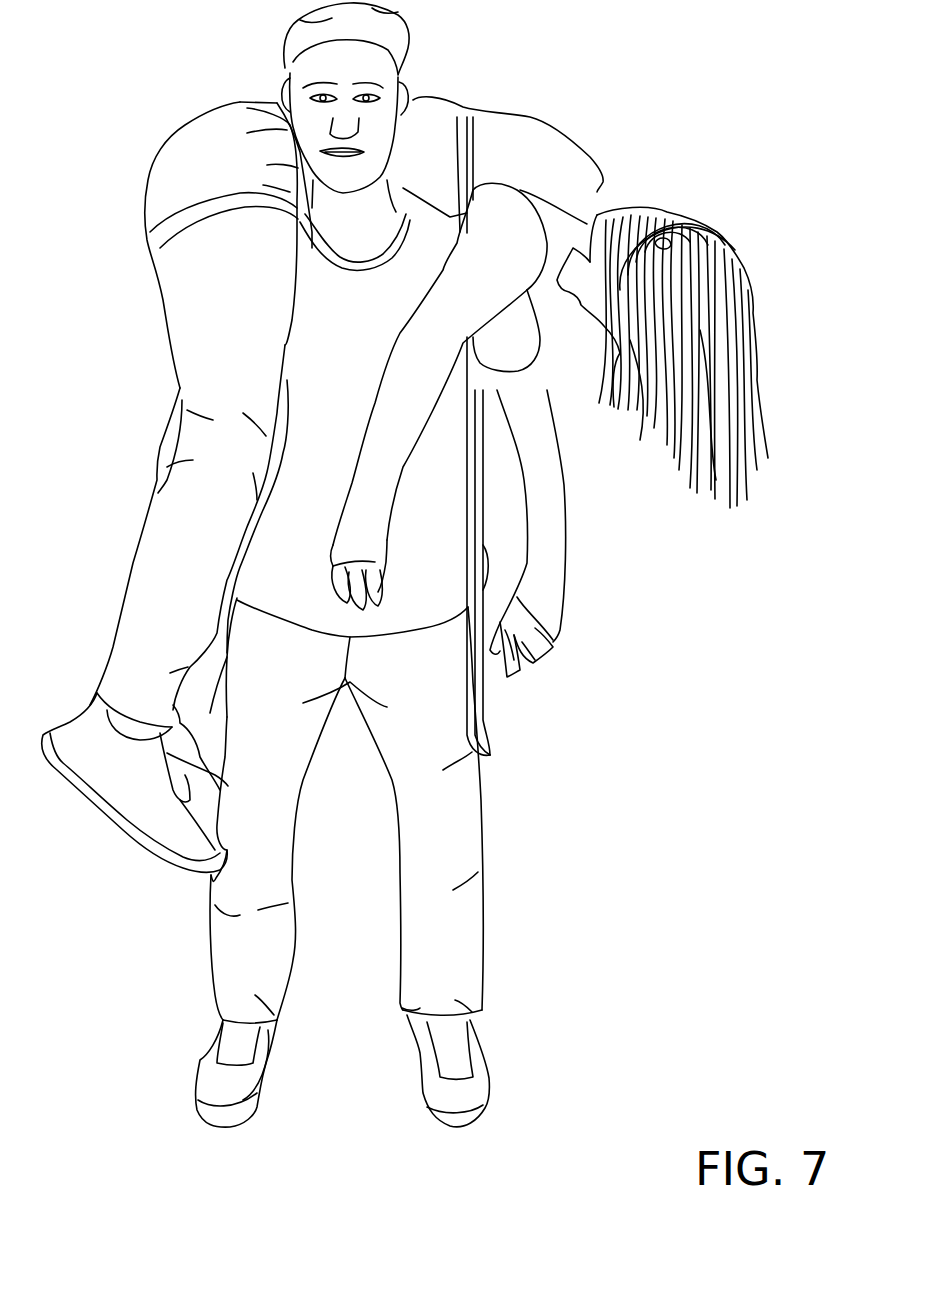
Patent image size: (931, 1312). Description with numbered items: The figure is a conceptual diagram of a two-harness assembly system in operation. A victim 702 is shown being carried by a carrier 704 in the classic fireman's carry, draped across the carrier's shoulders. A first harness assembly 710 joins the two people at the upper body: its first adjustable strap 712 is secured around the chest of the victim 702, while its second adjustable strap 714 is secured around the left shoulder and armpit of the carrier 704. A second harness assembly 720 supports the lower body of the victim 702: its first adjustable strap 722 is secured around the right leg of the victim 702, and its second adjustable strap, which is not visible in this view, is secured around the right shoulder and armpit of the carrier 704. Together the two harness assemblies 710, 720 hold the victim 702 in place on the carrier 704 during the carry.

The victim 702 is at (405, 468).
The carrier 704 is at (472, 963).
The first harness assembly 710 is at (487, 392).
The first adjustable strap 712 is at (473, 113).
The second adjustable strap 714 is at (458, 225).
The second harness assembly 720 is at (170, 491).
The first adjustable strap 722 is at (157, 237).